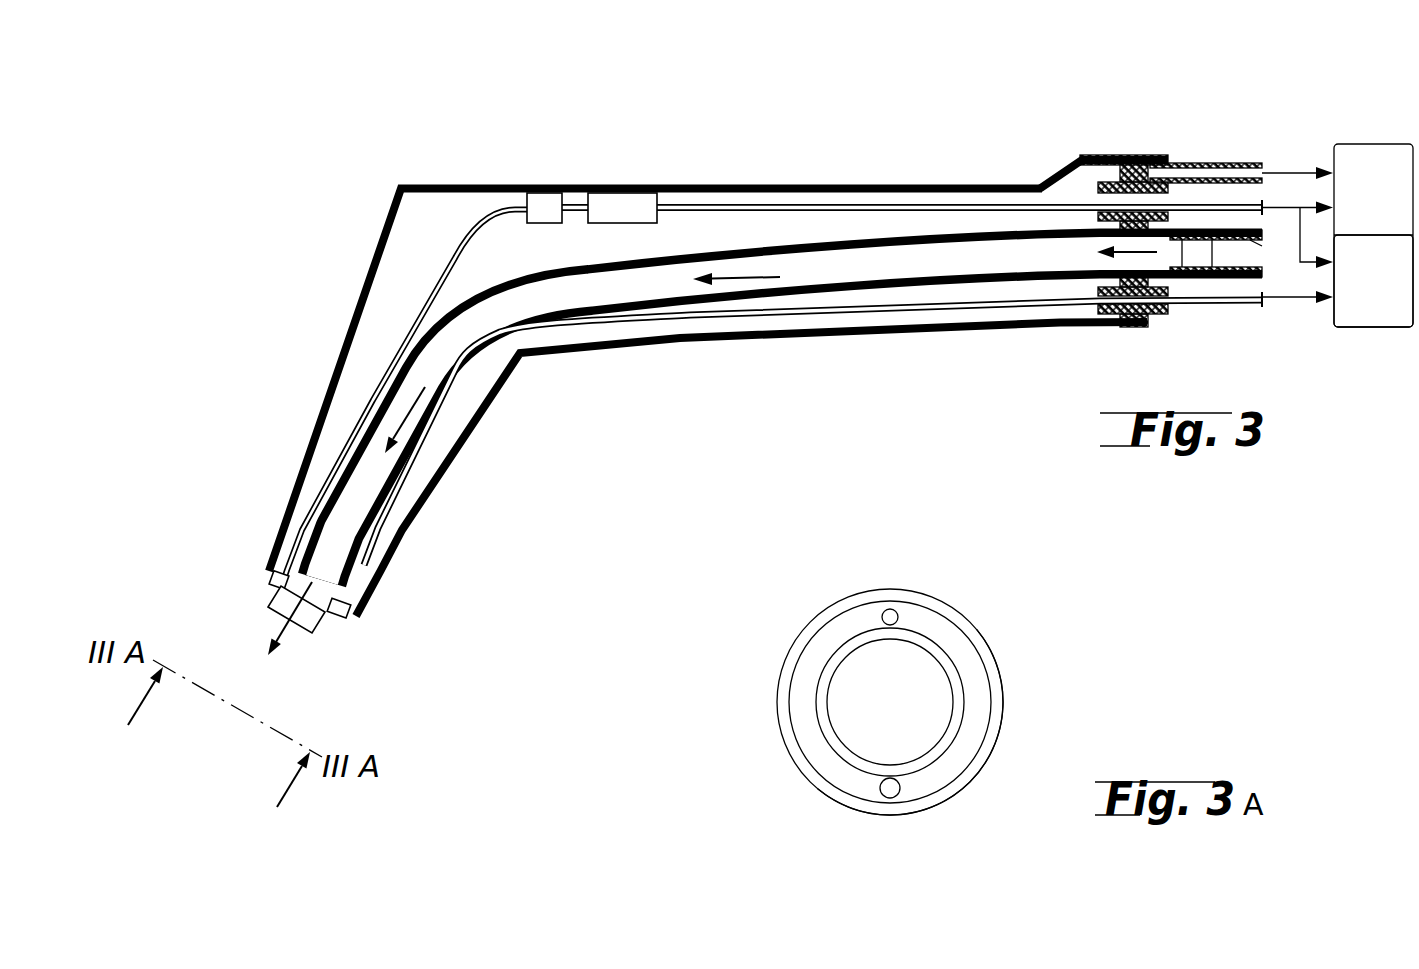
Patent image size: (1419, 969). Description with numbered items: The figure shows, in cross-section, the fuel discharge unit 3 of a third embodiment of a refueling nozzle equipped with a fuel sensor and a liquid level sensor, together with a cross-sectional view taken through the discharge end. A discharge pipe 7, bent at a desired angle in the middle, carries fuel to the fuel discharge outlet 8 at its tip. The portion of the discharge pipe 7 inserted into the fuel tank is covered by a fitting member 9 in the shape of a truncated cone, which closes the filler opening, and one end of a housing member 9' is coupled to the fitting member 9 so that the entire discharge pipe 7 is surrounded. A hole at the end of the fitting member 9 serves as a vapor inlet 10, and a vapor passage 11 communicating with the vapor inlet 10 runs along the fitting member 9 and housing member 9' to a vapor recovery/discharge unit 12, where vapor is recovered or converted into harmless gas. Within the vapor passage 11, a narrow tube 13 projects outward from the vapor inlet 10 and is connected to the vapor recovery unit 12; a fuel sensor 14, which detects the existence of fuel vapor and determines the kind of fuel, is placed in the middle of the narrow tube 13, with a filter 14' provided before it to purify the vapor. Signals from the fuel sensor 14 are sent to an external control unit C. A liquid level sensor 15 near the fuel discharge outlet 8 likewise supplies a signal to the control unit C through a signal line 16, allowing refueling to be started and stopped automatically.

In FIG. 3, the fuel discharge unit 3 is at (800, 396).
In FIG. 3, the discharge pipe 7 is at (610, 295).
In FIG. 3A, the discharge pipe 7 is at (817, 700).
In FIG. 3, the fuel discharge outlet 8 is at (292, 630).
In FIG. 3A, the fuel discharge outlet 8 is at (935, 683).
In FIG. 3, the fitting member 9 is at (718, 365).
In FIG. 3A, the fitting member 9 is at (896, 690).
In FIG. 3, the housing member 9' is at (751, 469).
In FIG. 3, the vapor inlet 10 is at (275, 577).
In FIG. 3A, the vapor inlet 10 is at (813, 642).
In FIG. 3, the vapor passage 11 is at (717, 227).
In FIG. 3, the vapor recovery/discharge unit 12 is at (1362, 157).
In FIG. 3, the narrow tube 13 is at (498, 212).
In FIG. 3A, the narrow tube 13 is at (885, 612).
In FIG. 3, the fuel sensor 14 is at (622, 164).
In FIG. 3, the filter 14' is at (545, 159).
In FIG. 3, the liquid level sensor 15 is at (333, 617).
In FIG. 3A, the liquid level sensor 15 is at (893, 790).
In FIG. 3, the signal line 16 is at (955, 303).
In FIG. 3, the control unit C is at (1362, 316).